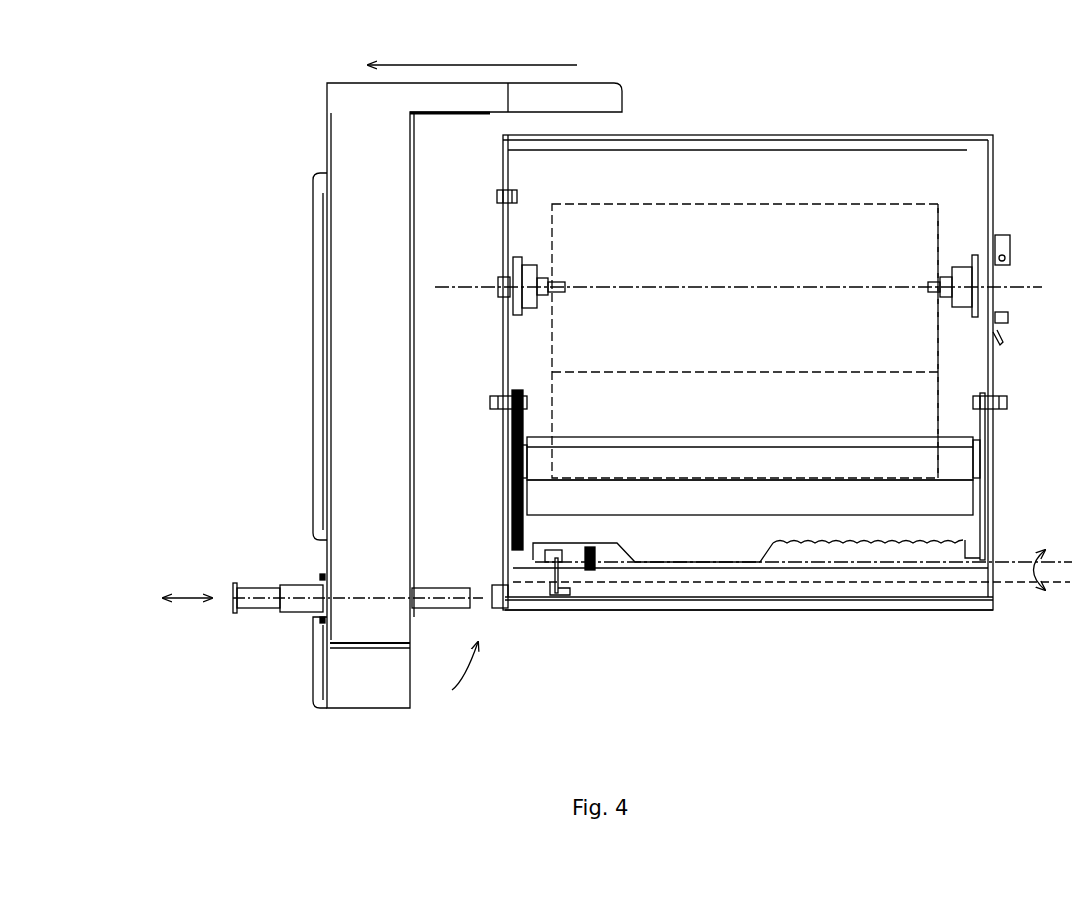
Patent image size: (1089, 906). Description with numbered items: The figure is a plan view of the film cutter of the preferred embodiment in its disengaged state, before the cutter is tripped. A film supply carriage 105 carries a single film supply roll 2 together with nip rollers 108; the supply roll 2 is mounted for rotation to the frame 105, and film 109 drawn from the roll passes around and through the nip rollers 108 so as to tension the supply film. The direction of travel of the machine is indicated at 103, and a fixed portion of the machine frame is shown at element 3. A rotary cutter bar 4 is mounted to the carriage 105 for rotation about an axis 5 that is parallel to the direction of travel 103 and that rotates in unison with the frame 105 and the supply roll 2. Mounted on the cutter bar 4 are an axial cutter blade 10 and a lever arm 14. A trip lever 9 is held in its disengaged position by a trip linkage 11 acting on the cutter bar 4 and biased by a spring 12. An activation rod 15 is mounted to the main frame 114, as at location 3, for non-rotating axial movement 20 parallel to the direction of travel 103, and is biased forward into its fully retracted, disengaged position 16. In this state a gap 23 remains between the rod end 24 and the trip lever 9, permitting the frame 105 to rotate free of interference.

The film supply roll 2 is at (722, 205).
The fixed portion of machine frame 3 is at (377, 687).
The rotary cutter bar 4 is at (745, 570).
The axis 5 is at (1050, 559).
The trip lever 9 is at (498, 610).
The axial cutter blade 10 is at (905, 548).
The trip linkage 11 is at (565, 597).
The spring 12 is at (592, 572).
The lever arm 14 is at (617, 555).
The activation rod 15 is at (263, 610).
The disengaged position 16 is at (233, 585).
The axial movement 20 is at (187, 585).
The gap 23 is at (460, 682).
The rod end 24 is at (468, 588).
The direction of travel 103 is at (472, 51).
The film supply carriage 105 is at (973, 135).
The nip rollers 108 is at (952, 507).
The film 109 is at (938, 390).
The main frame 114 is at (318, 205).